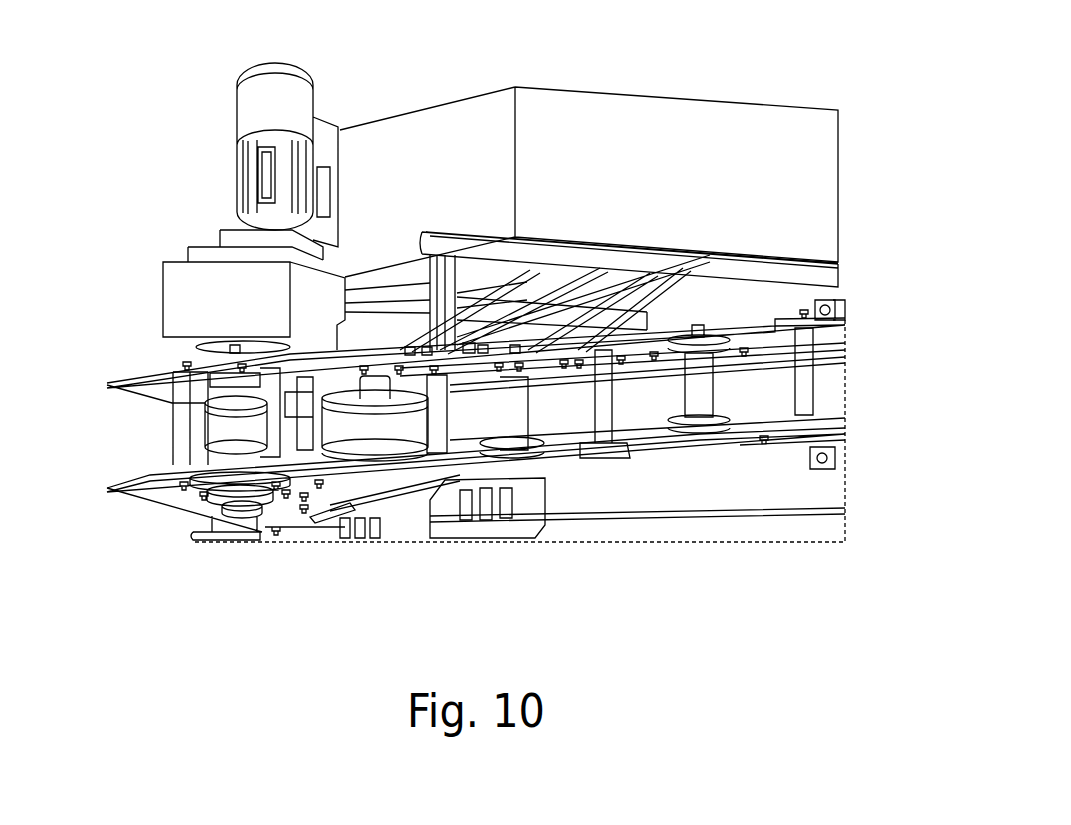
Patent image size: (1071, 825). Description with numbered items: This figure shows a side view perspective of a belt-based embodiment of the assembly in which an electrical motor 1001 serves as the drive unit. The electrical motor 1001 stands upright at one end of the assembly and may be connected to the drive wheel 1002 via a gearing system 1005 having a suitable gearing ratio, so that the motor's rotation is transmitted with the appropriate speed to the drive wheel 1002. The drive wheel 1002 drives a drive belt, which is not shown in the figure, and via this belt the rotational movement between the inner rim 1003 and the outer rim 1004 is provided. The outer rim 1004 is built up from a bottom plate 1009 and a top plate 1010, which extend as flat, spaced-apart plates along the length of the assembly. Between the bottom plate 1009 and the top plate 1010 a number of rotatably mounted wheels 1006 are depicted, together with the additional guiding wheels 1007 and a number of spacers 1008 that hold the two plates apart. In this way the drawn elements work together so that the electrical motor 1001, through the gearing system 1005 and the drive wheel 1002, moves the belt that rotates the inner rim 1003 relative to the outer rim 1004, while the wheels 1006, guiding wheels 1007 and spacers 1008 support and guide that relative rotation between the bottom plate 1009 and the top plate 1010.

The electrical motor 1001 is at (247, 102).
The gearing system 1005 is at (163, 290).
The drive wheel 1002 is at (222, 421).
The outer rim 1004 is at (152, 490).
The additional guiding wheels 1007 is at (386, 420).
The spacers 1008 is at (600, 425).
The rotatably mounted wheels 1006 is at (693, 422).
The inner rim 1003 is at (825, 375).
The bottom plate 1009 is at (747, 440).
The top plate 1010 is at (740, 338).